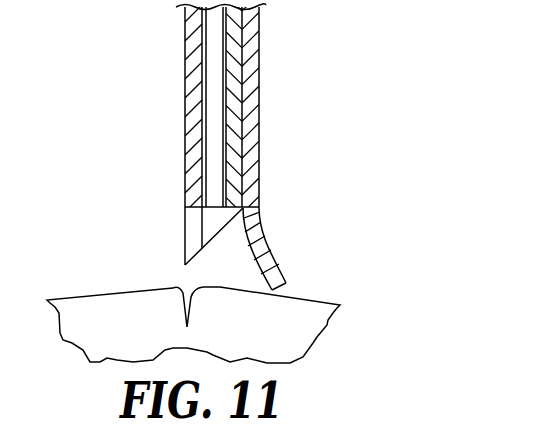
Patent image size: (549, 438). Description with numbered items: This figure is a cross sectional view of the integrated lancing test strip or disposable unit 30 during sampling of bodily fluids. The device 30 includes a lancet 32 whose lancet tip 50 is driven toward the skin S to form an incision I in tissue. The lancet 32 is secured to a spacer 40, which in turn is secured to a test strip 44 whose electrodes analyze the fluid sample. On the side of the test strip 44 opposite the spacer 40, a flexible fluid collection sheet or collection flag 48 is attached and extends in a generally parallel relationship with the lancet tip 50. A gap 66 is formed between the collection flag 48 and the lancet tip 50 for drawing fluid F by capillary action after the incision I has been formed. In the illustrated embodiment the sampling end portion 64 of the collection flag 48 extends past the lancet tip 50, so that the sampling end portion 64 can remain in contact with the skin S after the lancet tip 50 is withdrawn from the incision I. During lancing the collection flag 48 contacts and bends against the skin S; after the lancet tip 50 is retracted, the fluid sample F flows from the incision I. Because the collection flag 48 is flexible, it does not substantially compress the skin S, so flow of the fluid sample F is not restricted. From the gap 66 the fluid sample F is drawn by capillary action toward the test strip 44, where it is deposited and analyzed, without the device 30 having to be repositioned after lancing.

The integrated lancing test strip 30 is at (348, 67).
The lancet 32 is at (192, 127).
The spacer 40 is at (212, 62).
The test strip 44 is at (230, 42).
The collection flag 48 is at (247, 135).
The lancet tip 50 is at (186, 263).
The sampling end portion 64 is at (288, 278).
The gap 66 is at (223, 218).
The skin S is at (312, 305).
The incision I is at (184, 307).
The fluid sample F is at (187, 282).